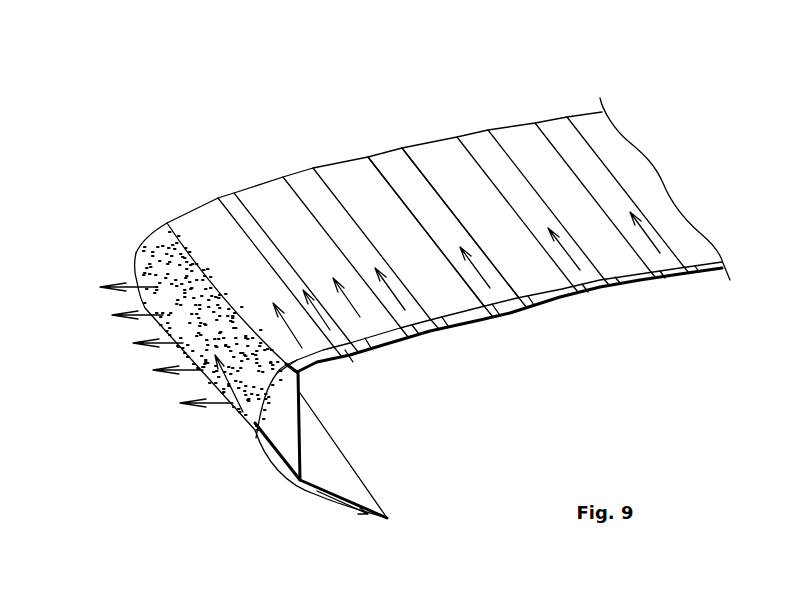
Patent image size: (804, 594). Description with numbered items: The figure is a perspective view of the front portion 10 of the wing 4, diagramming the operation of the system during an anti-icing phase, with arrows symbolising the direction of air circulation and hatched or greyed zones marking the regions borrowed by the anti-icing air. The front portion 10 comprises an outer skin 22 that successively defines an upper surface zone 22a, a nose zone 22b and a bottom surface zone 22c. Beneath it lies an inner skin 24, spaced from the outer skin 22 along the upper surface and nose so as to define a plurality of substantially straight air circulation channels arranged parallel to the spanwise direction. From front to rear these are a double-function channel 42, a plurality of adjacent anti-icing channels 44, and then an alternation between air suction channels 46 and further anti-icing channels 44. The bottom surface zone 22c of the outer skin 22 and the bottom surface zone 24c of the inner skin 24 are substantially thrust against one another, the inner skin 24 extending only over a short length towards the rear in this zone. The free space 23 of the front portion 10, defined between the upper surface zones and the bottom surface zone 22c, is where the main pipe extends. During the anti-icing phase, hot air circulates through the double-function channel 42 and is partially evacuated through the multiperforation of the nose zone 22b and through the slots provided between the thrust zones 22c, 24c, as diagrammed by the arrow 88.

The wing 4 is at (352, 62).
The front portion of the wing 10 is at (292, 143).
The outer skin 22 is at (525, 153).
The upper surface zone of the outer skin 22a is at (443, 170).
The nose zone of the outer skin 22b is at (160, 256).
The bottom surface zone of the outer skin 22c is at (323, 502).
The free space 23 is at (578, 347).
The inner skin 24 is at (711, 275).
The bottom surface zone of the inner skin 24c is at (352, 483).
The double-function channel 42 is at (281, 417).
The anti-icing channels 44 is at (420, 339).
The air suction channels 46 is at (458, 322).
The arrow 88 is at (335, 508).